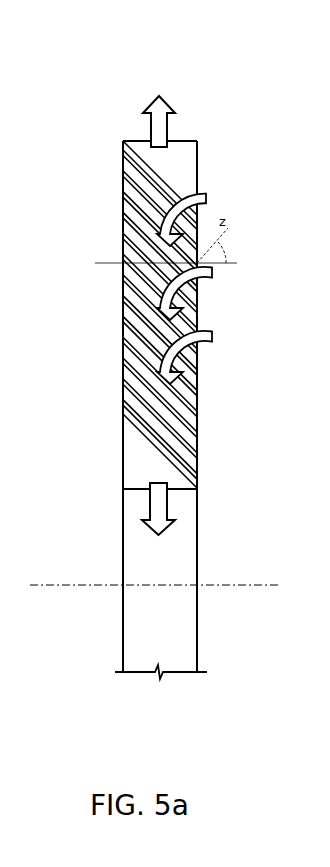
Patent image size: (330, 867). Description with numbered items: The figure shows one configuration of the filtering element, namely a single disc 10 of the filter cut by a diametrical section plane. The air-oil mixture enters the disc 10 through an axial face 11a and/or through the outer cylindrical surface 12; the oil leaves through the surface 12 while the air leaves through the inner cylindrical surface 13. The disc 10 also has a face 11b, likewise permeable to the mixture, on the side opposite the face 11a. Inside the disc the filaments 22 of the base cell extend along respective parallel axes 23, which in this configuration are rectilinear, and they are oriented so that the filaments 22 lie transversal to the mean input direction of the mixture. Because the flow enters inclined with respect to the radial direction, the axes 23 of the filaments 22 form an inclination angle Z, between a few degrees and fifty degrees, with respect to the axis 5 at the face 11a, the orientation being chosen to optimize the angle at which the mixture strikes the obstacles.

The disc 10 is at (120, 98).
The outer cylindrical surface 12 is at (192, 131).
The axes 23 is at (216, 205).
The filaments 22 is at (122, 313).
The face 11b is at (117, 404).
The axial face 11a is at (206, 401).
The surface 13 is at (186, 497).
The axis 5 is at (262, 590).